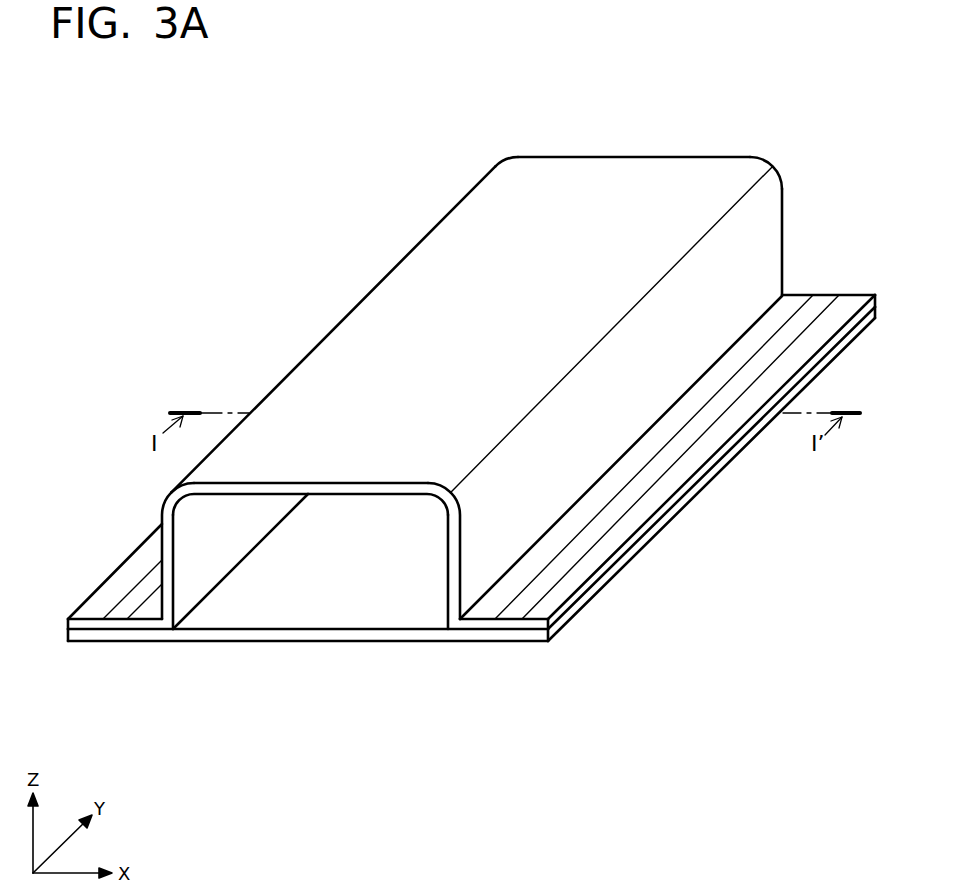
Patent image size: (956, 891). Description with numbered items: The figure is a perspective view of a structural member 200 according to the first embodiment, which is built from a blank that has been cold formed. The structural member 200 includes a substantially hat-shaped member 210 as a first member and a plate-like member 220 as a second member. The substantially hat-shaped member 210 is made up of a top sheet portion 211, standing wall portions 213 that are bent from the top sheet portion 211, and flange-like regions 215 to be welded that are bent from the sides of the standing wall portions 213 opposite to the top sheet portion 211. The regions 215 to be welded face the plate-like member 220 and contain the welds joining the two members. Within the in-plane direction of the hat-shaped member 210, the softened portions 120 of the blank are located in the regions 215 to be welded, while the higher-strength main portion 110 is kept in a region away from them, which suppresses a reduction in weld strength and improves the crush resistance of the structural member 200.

The structural member 200 is at (372, 141).
The substantially hat-shaped member 210 is at (472, 380).
The top sheet portion 211 is at (605, 172).
The standing wall portion 213 is at (185, 592).
The region to be welded 215 is at (100, 602).
The plate-like member 220 is at (362, 649).
The softened portion 120 is at (818, 310).
The main portion 110 is at (687, 172).